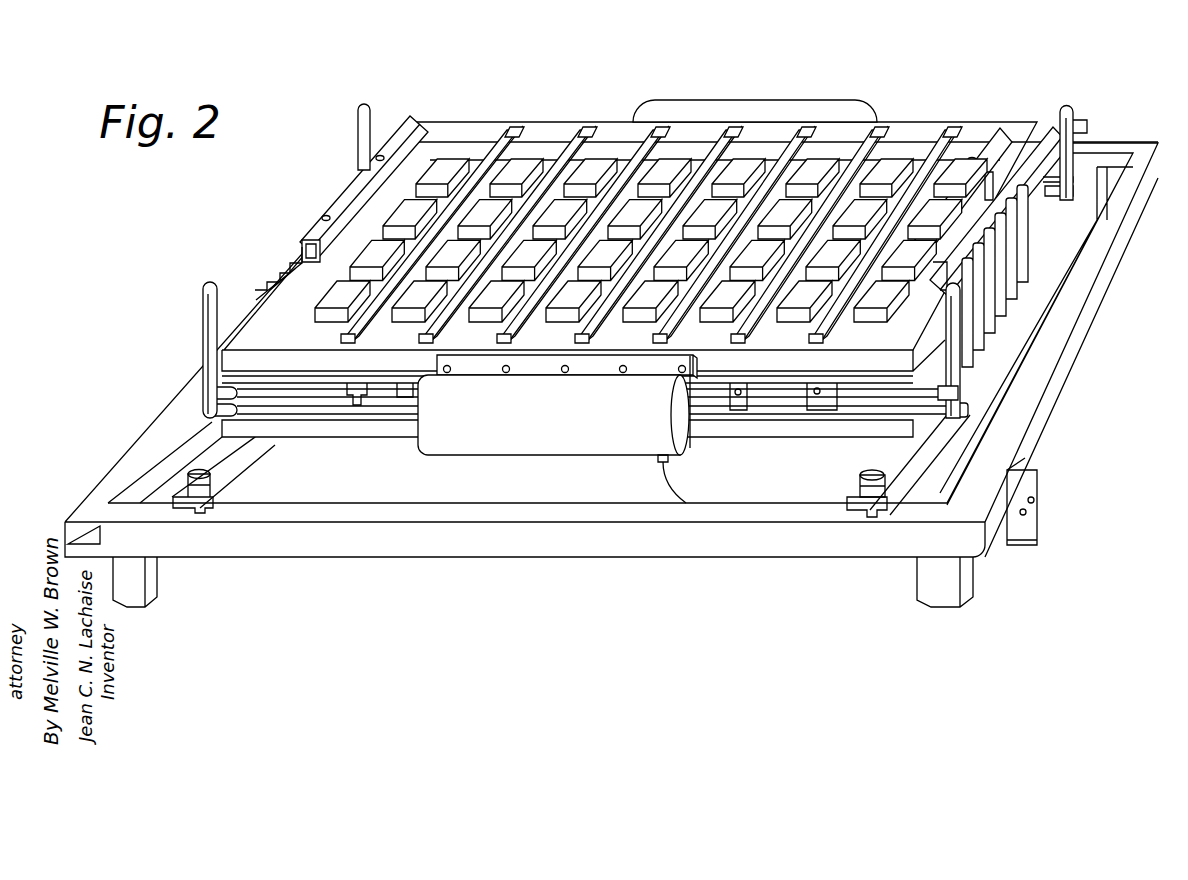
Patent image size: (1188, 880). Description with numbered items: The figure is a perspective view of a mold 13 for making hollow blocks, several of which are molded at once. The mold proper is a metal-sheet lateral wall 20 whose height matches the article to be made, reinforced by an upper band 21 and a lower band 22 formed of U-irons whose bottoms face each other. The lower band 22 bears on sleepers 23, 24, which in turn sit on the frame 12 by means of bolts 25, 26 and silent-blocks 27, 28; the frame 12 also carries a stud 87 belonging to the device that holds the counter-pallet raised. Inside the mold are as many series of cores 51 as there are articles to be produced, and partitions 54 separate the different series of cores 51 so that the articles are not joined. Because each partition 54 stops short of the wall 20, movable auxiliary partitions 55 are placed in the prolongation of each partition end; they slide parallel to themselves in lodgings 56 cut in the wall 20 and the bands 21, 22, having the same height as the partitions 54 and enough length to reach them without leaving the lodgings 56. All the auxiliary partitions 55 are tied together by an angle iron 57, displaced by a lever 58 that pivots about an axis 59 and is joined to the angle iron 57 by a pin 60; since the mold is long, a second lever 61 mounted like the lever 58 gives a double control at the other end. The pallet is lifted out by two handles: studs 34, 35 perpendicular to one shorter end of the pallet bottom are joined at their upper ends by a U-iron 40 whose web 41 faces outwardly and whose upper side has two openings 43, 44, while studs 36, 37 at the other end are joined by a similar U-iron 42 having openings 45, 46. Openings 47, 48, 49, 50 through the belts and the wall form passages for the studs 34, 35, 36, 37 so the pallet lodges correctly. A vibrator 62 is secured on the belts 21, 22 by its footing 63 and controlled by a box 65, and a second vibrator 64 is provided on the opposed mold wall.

The frame 12 is at (1017, 438).
The mold 13 is at (910, 360).
The lateral wall 20 is at (877, 379).
The upper band 21 is at (1060, 95).
The lower band 22 is at (242, 430).
The sleeper 23 is at (888, 458).
The sleeper 24 is at (218, 466).
The bolt 25 is at (858, 473).
The bolt 26 is at (207, 483).
The silent-block 27 is at (858, 510).
The silent-block 28 is at (207, 497).
The stud 34 is at (933, 290).
The stud 35 is at (1038, 125).
The stud 36 is at (312, 240).
The stud 37 is at (403, 133).
The U-iron 40 is at (990, 185).
The web 41 is at (1005, 195).
The U-iron 42 is at (351, 193).
The opening 43 is at (967, 157).
The opening 44 is at (945, 250).
The opening 45 is at (326, 214).
The opening 46 is at (382, 154).
The opening 47 is at (947, 268).
The opening 48 is at (992, 193).
The opening 49 is at (300, 280).
The opening 50 is at (410, 182).
The cores 51 is at (702, 165).
The partition 54 is at (488, 160).
The auxiliary partition 55 is at (583, 130).
The lodging 56 is at (653, 137).
The angle iron 57 is at (888, 393).
The lever 58 is at (953, 340).
The axis 59 is at (968, 412).
The pin 60 is at (958, 395).
The lever 61 is at (208, 300).
The vibrator 62 is at (555, 417).
The footing 63 is at (490, 372).
The second vibrator 64 is at (802, 106).
The box 65 is at (1010, 537).
The stud 87 is at (642, 540).